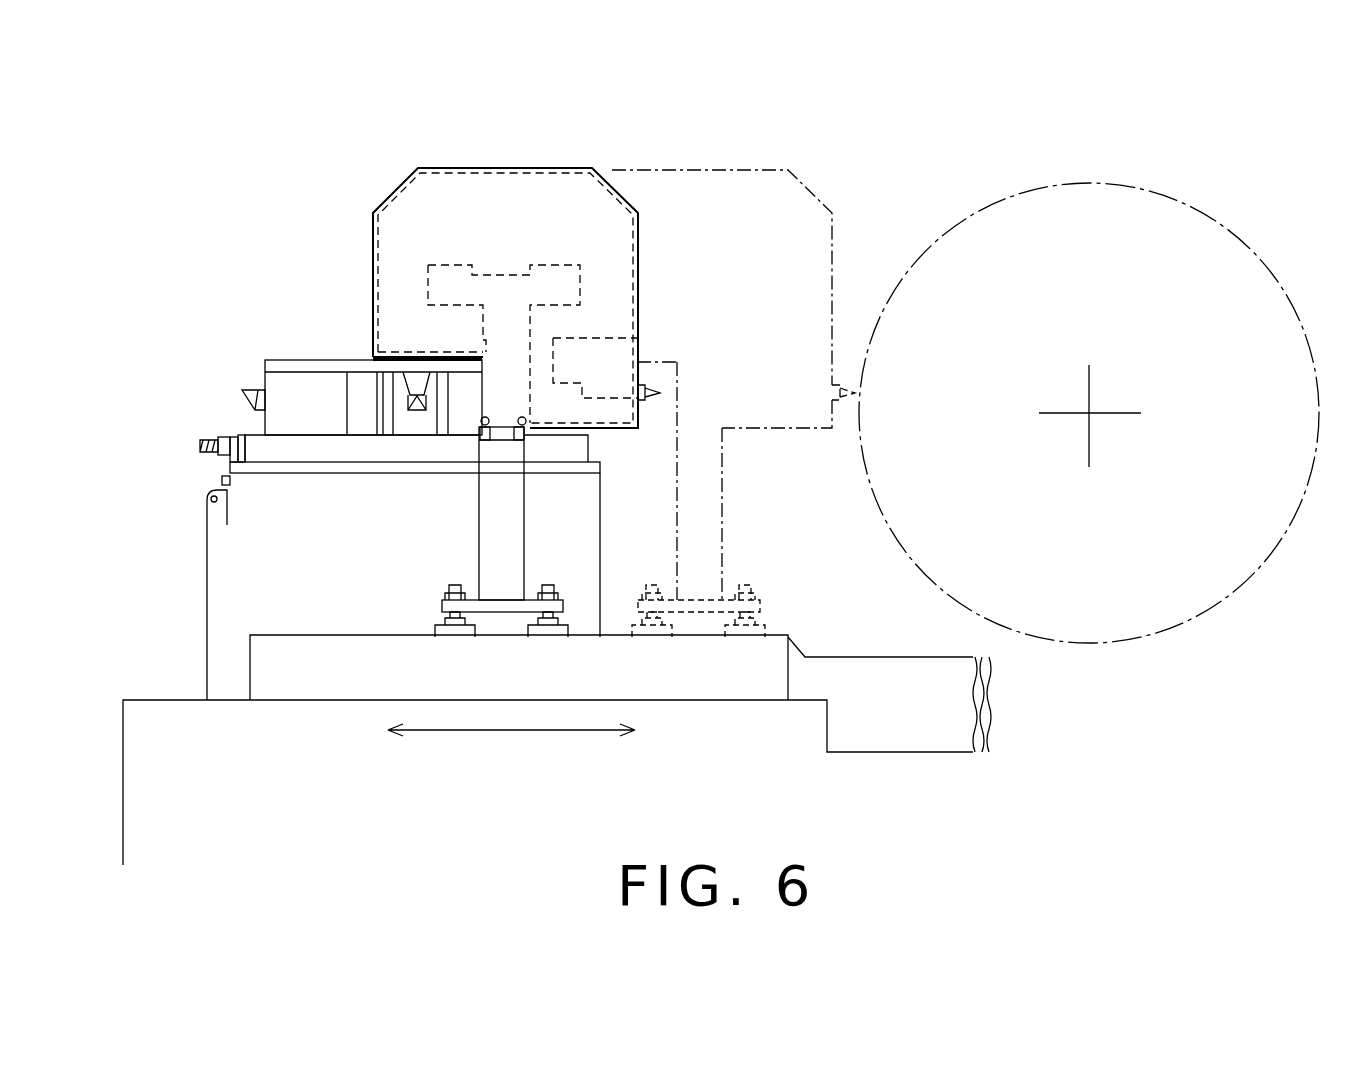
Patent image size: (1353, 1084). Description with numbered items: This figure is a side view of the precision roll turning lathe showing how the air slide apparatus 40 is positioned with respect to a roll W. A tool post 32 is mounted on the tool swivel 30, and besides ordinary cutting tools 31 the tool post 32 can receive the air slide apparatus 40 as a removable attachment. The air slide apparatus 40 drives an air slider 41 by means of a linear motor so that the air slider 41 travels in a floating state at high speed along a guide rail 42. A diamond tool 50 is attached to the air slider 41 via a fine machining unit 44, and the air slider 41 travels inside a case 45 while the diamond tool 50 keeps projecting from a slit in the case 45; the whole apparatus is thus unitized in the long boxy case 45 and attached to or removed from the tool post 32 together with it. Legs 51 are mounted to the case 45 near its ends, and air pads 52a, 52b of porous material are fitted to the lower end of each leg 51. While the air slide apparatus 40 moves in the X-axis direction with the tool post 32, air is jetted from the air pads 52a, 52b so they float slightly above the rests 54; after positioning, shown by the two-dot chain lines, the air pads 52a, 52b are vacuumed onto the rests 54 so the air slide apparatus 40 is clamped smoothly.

The tool swivel 30 is at (230, 560).
The cutting tool 31 is at (247, 380).
The tool post 32 is at (305, 385).
The air slide apparatus 40 is at (550, 152).
The air slider 41 is at (458, 195).
The guide rail 42 is at (553, 262).
The fine machining unit 44 is at (605, 350).
The case 45 is at (373, 237).
The diamond tool 50 is at (660, 393).
The leg 51 is at (490, 513).
The air pad 52a is at (455, 640).
The air pad 52b is at (548, 640).
The rest 54 is at (300, 655).
The wafer W is at (1103, 185).